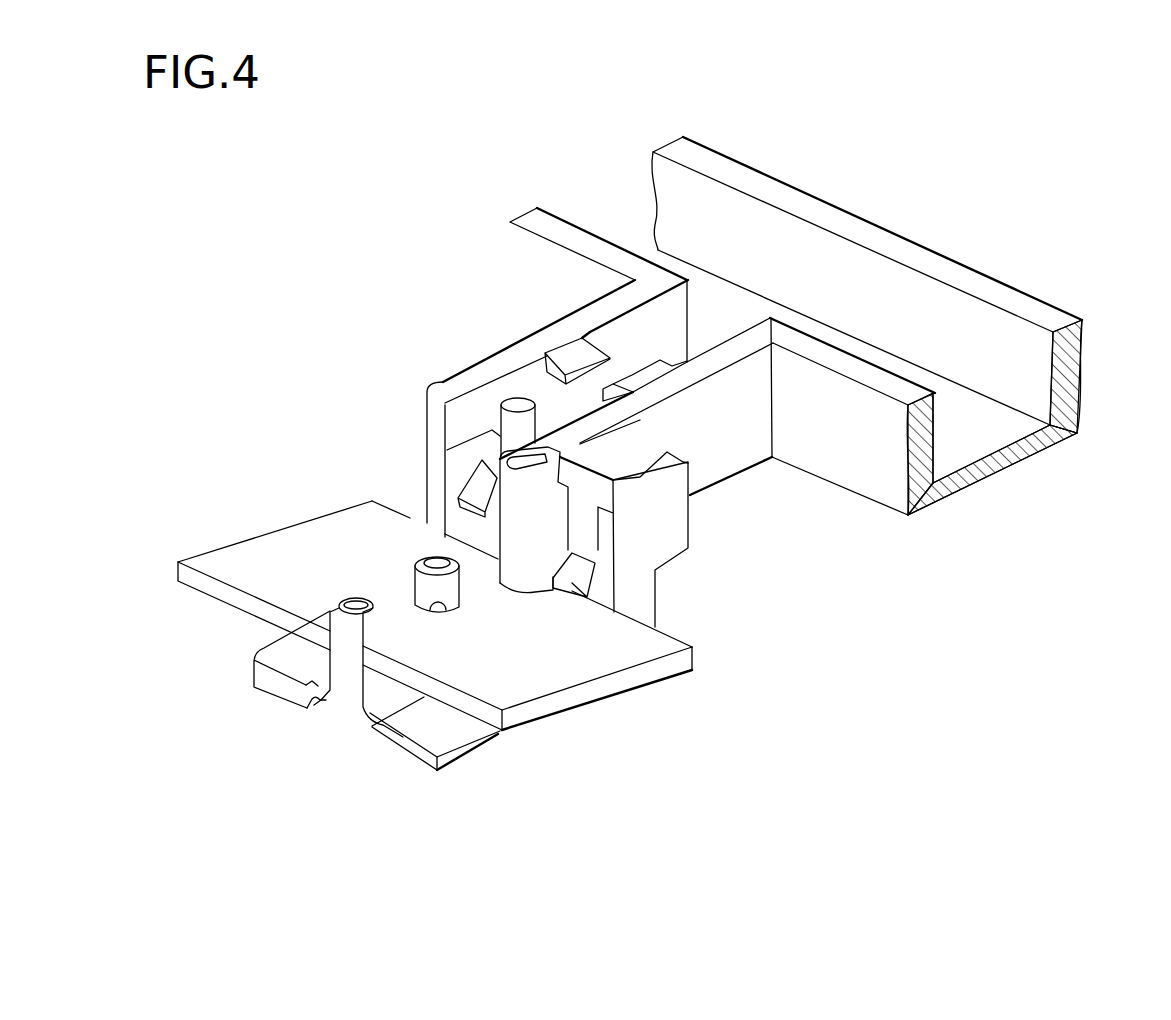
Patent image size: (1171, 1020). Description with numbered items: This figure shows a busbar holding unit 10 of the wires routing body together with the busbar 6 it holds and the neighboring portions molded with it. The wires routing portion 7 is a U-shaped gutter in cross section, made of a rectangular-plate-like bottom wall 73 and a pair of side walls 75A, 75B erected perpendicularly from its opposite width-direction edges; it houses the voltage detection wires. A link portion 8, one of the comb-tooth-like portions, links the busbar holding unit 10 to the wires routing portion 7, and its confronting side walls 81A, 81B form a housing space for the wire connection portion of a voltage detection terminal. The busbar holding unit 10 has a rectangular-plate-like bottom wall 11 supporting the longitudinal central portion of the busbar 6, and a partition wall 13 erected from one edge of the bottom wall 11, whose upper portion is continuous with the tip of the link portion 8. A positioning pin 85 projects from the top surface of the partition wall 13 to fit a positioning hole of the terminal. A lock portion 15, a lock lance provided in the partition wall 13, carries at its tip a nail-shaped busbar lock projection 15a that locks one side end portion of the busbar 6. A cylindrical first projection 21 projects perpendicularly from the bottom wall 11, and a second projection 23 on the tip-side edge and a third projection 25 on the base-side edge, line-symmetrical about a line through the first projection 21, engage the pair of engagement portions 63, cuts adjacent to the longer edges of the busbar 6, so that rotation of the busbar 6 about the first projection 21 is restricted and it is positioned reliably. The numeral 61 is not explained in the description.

The wires routing portion 7 is at (917, 302).
The side wall 75A is at (830, 213).
The side wall 75B is at (575, 240).
The bottom wall 73 is at (730, 310).
The link portion 8 is at (495, 343).
The side wall 81A is at (707, 392).
The side wall 81B is at (519, 345).
The positioning pin 85 is at (518, 405).
The busbar 6 is at (330, 542).
The first projection 21 is at (397, 557).
The second projection 23 is at (350, 598).
The third projection 25 is at (498, 527).
The projection 61 is at (436, 612).
The engagement portion 63 is at (358, 640).
The busbar holding unit 10 is at (501, 751).
The bottom wall 11 is at (425, 733).
The partition wall 13 is at (612, 466).
The lock portion 15 is at (597, 540).
The busbar lock projection 15a is at (577, 582).